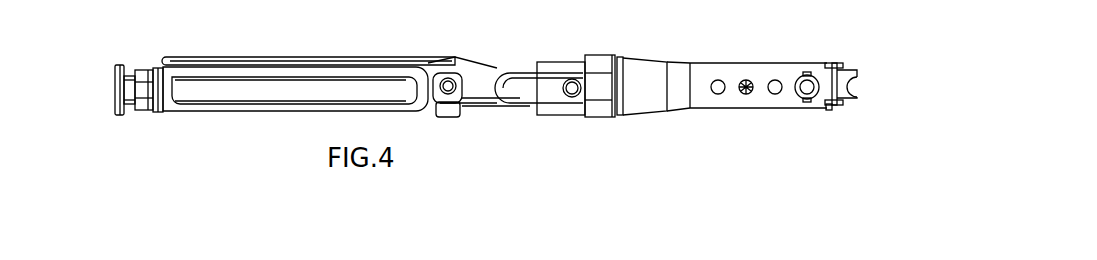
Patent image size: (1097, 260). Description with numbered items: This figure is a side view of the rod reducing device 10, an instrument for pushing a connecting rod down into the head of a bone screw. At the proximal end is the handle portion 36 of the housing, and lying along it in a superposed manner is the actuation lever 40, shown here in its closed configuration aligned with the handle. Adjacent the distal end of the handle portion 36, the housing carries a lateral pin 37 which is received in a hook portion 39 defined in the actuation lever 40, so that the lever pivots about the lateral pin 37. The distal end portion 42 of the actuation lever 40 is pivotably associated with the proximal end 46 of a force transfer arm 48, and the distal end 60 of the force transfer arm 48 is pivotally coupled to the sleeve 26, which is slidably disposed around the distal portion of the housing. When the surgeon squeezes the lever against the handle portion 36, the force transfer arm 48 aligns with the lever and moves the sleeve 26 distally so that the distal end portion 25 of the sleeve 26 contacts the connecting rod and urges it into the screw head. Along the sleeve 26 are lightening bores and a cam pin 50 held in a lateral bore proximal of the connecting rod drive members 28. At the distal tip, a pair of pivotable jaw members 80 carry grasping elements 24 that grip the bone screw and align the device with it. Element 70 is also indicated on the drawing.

The rod reducing device 10 is at (388, 38).
The handle portion 36 is at (220, 95).
The actuation lever 40 is at (228, 59).
The distal end portion 42 is at (507, 67).
The hook portion 39 is at (449, 88).
The lateral pin 37 is at (450, 105).
The proximal end 46 is at (513, 84).
The force transfer arm 48 is at (545, 88).
The distal end 60 is at (588, 68).
The ring 70 is at (607, 107).
The sleeve 26 is at (700, 75).
The cam pin 50 is at (808, 75).
The distal end portion 25 is at (853, 70).
The connecting rod drive member 28 is at (855, 90).
The grasping element 24 is at (840, 103).
The jaw member 80 is at (828, 106).